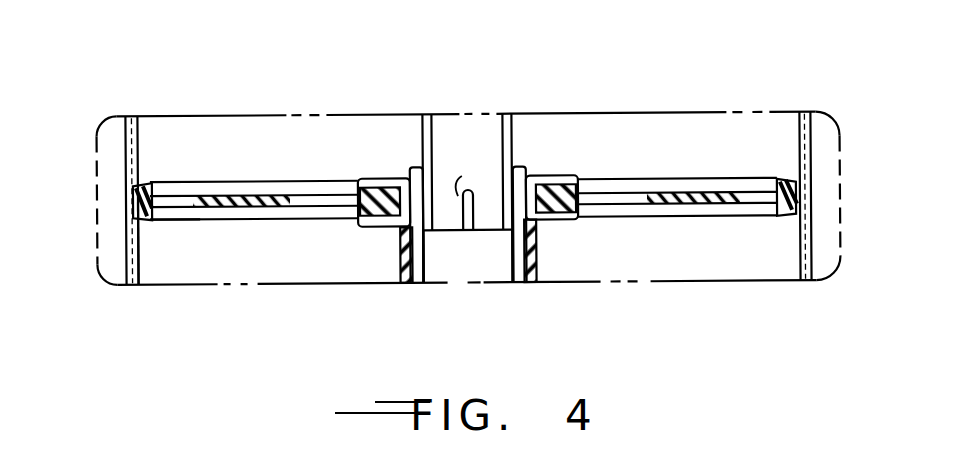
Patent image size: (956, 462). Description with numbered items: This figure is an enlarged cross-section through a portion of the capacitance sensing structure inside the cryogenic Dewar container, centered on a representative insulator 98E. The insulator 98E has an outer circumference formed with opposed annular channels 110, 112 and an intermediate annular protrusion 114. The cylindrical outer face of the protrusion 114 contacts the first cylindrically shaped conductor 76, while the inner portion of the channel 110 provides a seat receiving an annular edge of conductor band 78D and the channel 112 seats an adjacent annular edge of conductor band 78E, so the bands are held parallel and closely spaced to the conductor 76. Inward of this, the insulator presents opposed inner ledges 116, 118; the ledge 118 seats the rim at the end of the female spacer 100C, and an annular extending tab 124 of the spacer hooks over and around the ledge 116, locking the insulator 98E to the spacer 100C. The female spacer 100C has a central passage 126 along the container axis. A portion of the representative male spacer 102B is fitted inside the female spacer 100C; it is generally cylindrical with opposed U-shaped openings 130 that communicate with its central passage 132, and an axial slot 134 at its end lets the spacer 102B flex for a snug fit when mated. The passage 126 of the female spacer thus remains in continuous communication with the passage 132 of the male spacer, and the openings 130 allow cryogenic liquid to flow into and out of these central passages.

The first cylindrically shaped conductor 76 is at (126, 166).
The conductor band 78D is at (141, 141).
The conductor band 78E is at (138, 273).
The insulator 98E is at (687, 186).
The female spacer 100C is at (592, 225).
The male spacer 102B is at (520, 166).
The annular channel 110 is at (144, 183).
The annular channel 112 is at (156, 216).
The intermediate annular protrusion 114 is at (133, 208).
The inner ledge 116 is at (545, 174).
The inner ledge 118 is at (558, 221).
The annular extending tab 124 is at (531, 169).
The central passage 126 is at (480, 262).
The U-shaped opening 130 is at (448, 265).
The central passage 132 is at (452, 128).
The axial slot 134 is at (468, 186).